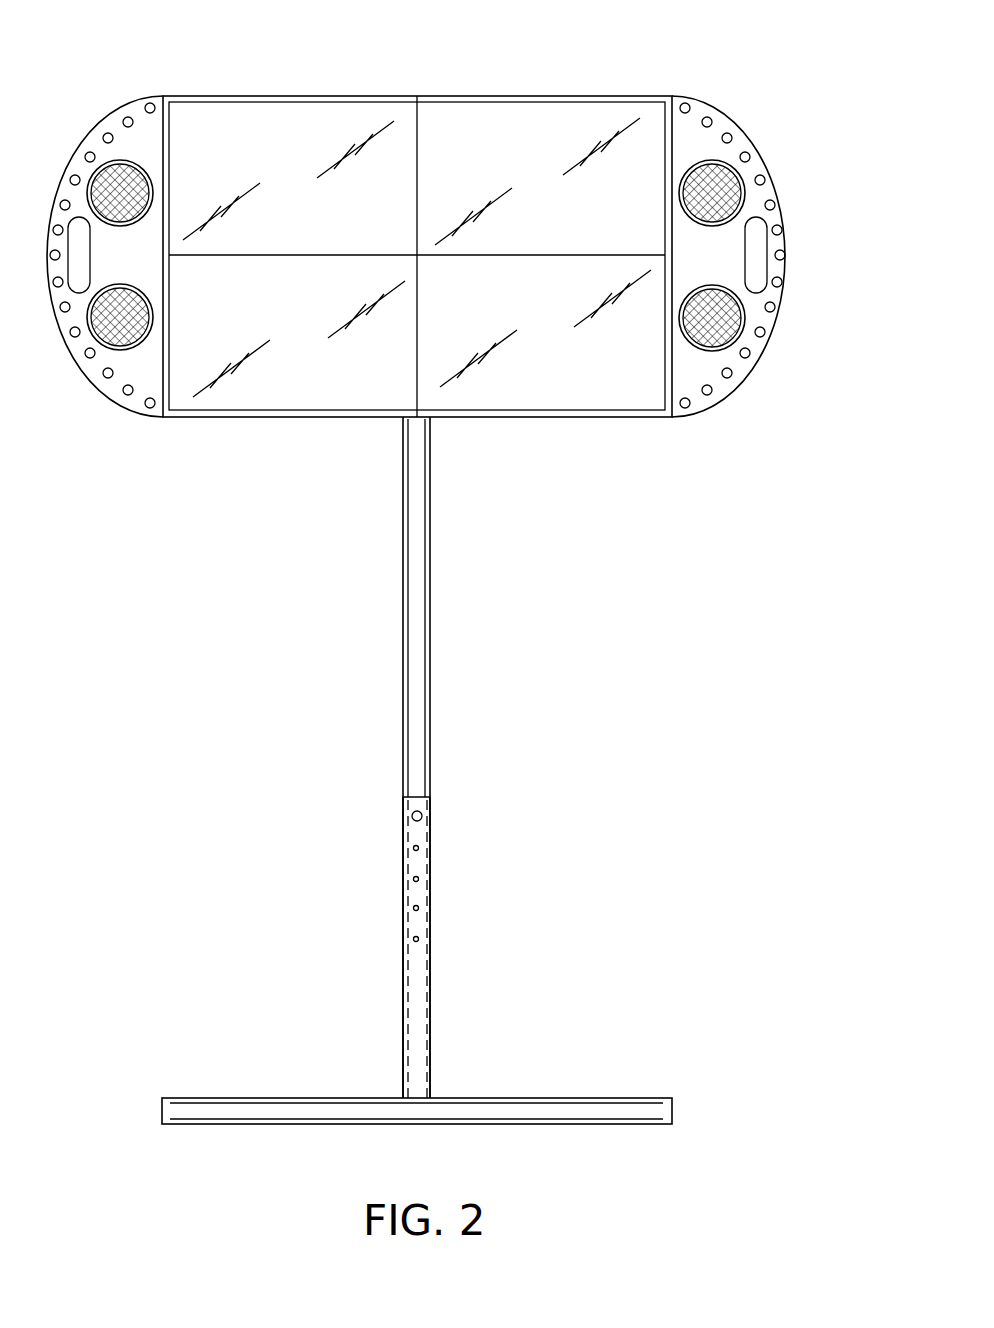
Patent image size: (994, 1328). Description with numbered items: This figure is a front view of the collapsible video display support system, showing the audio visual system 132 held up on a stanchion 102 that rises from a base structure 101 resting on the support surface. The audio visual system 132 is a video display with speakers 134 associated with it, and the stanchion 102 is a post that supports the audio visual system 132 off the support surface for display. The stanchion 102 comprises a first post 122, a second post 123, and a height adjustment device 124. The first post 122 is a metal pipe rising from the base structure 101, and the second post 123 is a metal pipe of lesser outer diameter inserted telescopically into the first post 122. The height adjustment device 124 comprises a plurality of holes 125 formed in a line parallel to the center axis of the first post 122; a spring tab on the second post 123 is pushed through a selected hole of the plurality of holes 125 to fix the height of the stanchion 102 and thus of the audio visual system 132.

The base structure 101 is at (571, 1103).
The stanchion 102 is at (430, 697).
The first post 122 is at (430, 1040).
The second post 123 is at (430, 610).
The height adjustment device 124 is at (430, 858).
The plurality of holes 125 is at (413, 939).
The audio visual system 132 is at (530, 148).
The speakers 134 is at (713, 318).